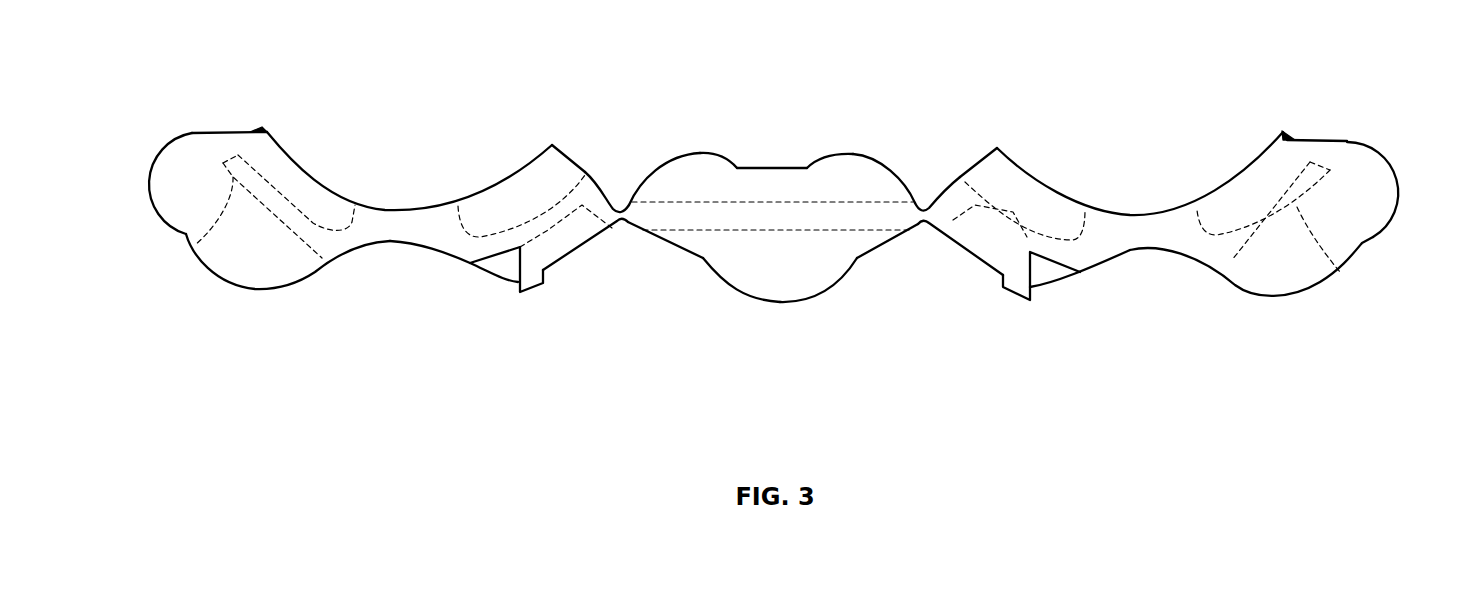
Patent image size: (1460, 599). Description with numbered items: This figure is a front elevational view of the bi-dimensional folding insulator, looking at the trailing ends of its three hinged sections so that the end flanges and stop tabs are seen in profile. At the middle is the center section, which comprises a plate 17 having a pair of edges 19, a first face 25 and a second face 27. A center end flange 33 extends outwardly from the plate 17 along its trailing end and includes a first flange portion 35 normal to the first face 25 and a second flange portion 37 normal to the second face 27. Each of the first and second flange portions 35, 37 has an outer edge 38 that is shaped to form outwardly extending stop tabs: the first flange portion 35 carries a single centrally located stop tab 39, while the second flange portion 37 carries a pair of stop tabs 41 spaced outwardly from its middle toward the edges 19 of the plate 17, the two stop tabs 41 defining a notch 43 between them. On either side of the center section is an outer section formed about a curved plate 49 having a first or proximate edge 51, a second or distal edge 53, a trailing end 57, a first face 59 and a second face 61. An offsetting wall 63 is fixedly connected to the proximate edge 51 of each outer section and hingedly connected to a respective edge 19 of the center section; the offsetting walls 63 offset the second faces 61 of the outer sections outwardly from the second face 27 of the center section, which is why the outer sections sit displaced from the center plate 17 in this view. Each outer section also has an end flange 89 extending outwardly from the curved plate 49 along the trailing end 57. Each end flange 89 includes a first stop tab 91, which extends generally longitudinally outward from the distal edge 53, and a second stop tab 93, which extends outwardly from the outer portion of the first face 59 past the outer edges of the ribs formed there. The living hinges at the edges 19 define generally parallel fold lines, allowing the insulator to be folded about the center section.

The plate 17 is at (657, 230).
The edges 19 is at (628, 198).
The first face 25 is at (848, 232).
The second face 27 is at (767, 200).
The center end flange 33 is at (723, 258).
The first flange portion 35 is at (765, 302).
The second flange portion 37 is at (703, 155).
The outer edge 38 is at (797, 168).
The stop tab 39 is at (808, 302).
The stop tabs 41 is at (678, 155).
The notch 43 is at (770, 168).
The curved plate 49 is at (322, 258).
The proximate edge 51 is at (585, 172).
The distal edge 53 is at (223, 163).
The trailing end 57 is at (500, 250).
The first face 59 is at (195, 245).
The second face 61 is at (262, 163).
The offsetting wall 63 is at (520, 288).
The end flange 89 is at (523, 175).
The first stop tab 91 is at (168, 138).
The second stop tab 93 is at (250, 288).